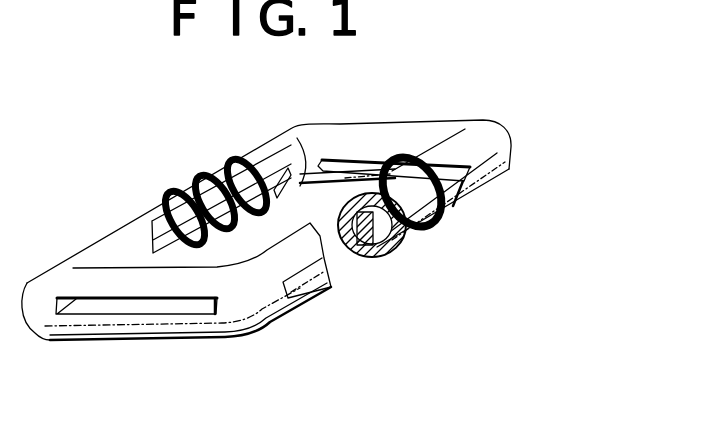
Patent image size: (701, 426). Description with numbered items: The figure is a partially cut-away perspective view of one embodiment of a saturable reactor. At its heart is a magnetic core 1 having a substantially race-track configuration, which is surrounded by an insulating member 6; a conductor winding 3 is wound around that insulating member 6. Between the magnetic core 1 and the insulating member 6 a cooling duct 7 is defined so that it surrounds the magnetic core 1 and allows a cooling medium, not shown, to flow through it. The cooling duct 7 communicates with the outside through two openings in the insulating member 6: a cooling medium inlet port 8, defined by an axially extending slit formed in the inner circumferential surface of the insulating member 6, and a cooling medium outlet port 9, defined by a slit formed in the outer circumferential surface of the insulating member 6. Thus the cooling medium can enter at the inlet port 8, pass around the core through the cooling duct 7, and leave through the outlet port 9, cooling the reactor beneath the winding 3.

The magnetic core 1 is at (372, 253).
The conductor winding 3 is at (240, 157).
The insulating member 6 is at (497, 154).
The cooling duct 7 is at (365, 256).
The cooling medium inlet port 8 is at (376, 157).
The cooling medium outlet port 9 is at (177, 304).